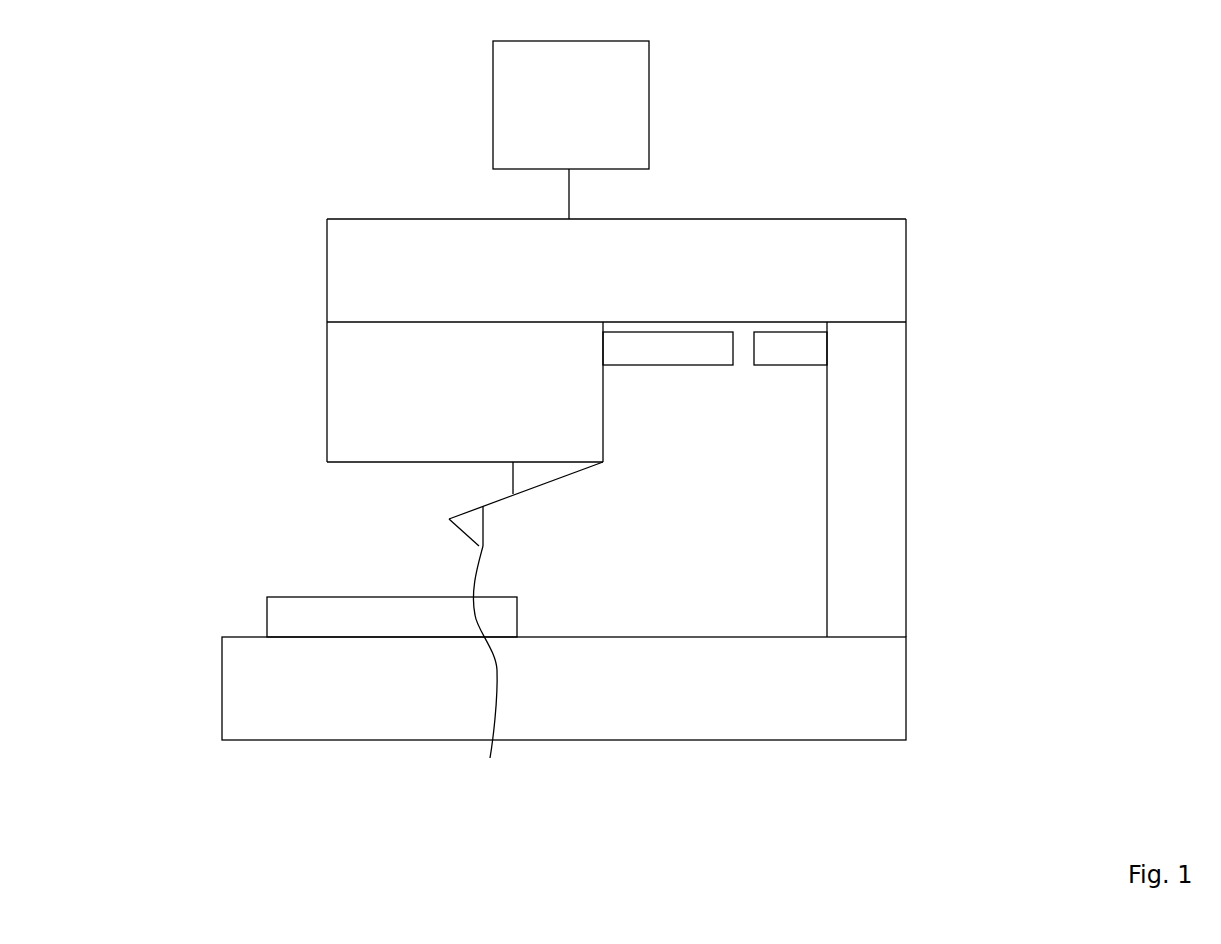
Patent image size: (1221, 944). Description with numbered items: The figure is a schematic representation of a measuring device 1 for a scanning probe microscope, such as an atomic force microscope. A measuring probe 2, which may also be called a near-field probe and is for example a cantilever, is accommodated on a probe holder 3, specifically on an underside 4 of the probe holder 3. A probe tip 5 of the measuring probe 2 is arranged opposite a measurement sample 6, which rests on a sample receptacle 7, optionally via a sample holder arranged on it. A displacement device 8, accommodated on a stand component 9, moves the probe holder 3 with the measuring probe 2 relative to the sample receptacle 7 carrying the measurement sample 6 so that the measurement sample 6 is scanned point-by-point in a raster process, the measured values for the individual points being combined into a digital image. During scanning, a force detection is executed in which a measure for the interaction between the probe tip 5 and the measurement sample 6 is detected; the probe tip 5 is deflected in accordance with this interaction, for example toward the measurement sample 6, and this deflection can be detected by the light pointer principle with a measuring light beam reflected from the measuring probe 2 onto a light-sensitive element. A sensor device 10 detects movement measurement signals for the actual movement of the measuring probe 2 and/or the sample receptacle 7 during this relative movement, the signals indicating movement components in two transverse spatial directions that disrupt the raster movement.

The measuring device 1 is at (912, 120).
The measuring probe 2 is at (567, 480).
The probe holder 3 is at (343, 385).
The underside 4 is at (338, 462).
The probe tip 5 is at (485, 671).
The measurement sample 6 is at (508, 100).
The sample receptacle 7 is at (895, 680).
The displacement device 8 is at (898, 272).
The stand component 9 is at (890, 447).
The sensor device 10 is at (716, 342).